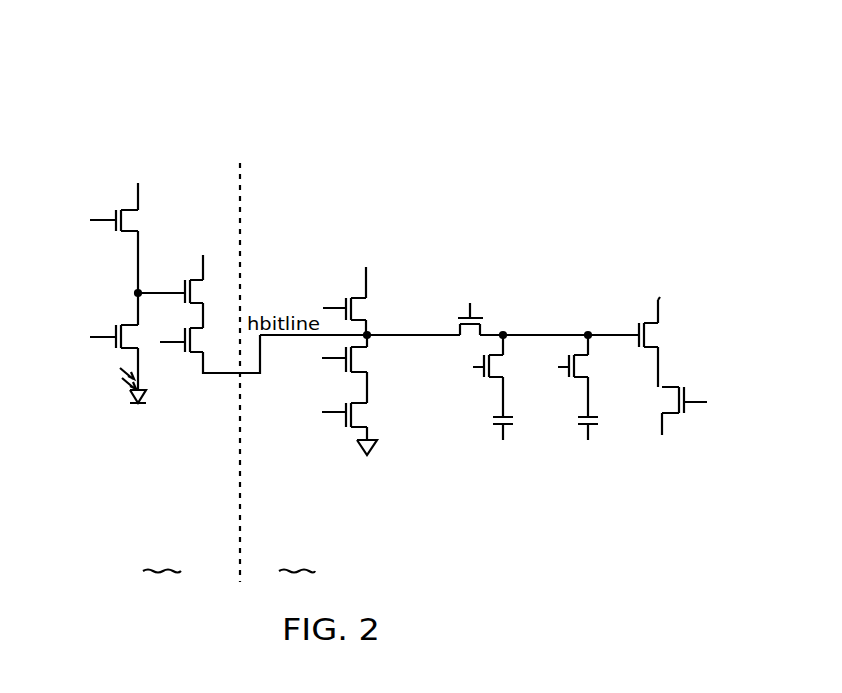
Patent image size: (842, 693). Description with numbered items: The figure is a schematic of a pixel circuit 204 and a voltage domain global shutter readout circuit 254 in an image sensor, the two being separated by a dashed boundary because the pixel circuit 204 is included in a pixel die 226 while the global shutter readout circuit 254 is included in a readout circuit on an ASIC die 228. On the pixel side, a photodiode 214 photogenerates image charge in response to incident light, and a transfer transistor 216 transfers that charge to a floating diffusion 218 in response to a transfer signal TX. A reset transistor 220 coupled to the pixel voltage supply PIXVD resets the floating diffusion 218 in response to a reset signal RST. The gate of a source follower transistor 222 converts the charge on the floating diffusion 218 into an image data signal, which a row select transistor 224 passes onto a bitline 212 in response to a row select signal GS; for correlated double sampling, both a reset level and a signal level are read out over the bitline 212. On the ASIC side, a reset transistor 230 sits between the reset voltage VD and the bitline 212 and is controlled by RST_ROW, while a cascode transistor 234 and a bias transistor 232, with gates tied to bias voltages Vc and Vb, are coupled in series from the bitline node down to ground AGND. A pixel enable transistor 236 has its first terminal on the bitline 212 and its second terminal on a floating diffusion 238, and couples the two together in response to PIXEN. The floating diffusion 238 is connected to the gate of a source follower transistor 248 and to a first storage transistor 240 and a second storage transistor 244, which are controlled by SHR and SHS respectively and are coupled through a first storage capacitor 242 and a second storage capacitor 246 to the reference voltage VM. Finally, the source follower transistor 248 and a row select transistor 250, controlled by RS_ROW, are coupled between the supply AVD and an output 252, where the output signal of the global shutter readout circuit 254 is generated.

The pixel circuit 204 is at (58, 55).
The global shutter readout circuit 254 is at (752, 70).
The bitline 212 is at (208, 383).
The photodiode 214 is at (120, 389).
The transfer transistor 216 is at (110, 349).
The floating diffusion 218 is at (131, 284).
The reset transistor 220 is at (112, 233).
The source follower transistor 222 is at (199, 290).
The row select transistor 224 is at (199, 340).
The pixel die 226 is at (162, 548).
The ASIC die 228 is at (302, 548).
The reset transistor 230 is at (368, 305).
The bias transistor 232 is at (351, 435).
The cascode transistor 234 is at (344, 373).
The pixel enable transistor 236 is at (460, 323).
The floating diffusion 238 is at (548, 306).
The first storage transistor 240 is at (497, 387).
The first storage capacitor 242 is at (496, 429).
The second storage transistor 244 is at (583, 387).
The second storage capacitor 246 is at (580, 431).
The source follower transistor 248 is at (665, 331).
The row select transistor 250 is at (683, 389).
The output 252 is at (683, 444).